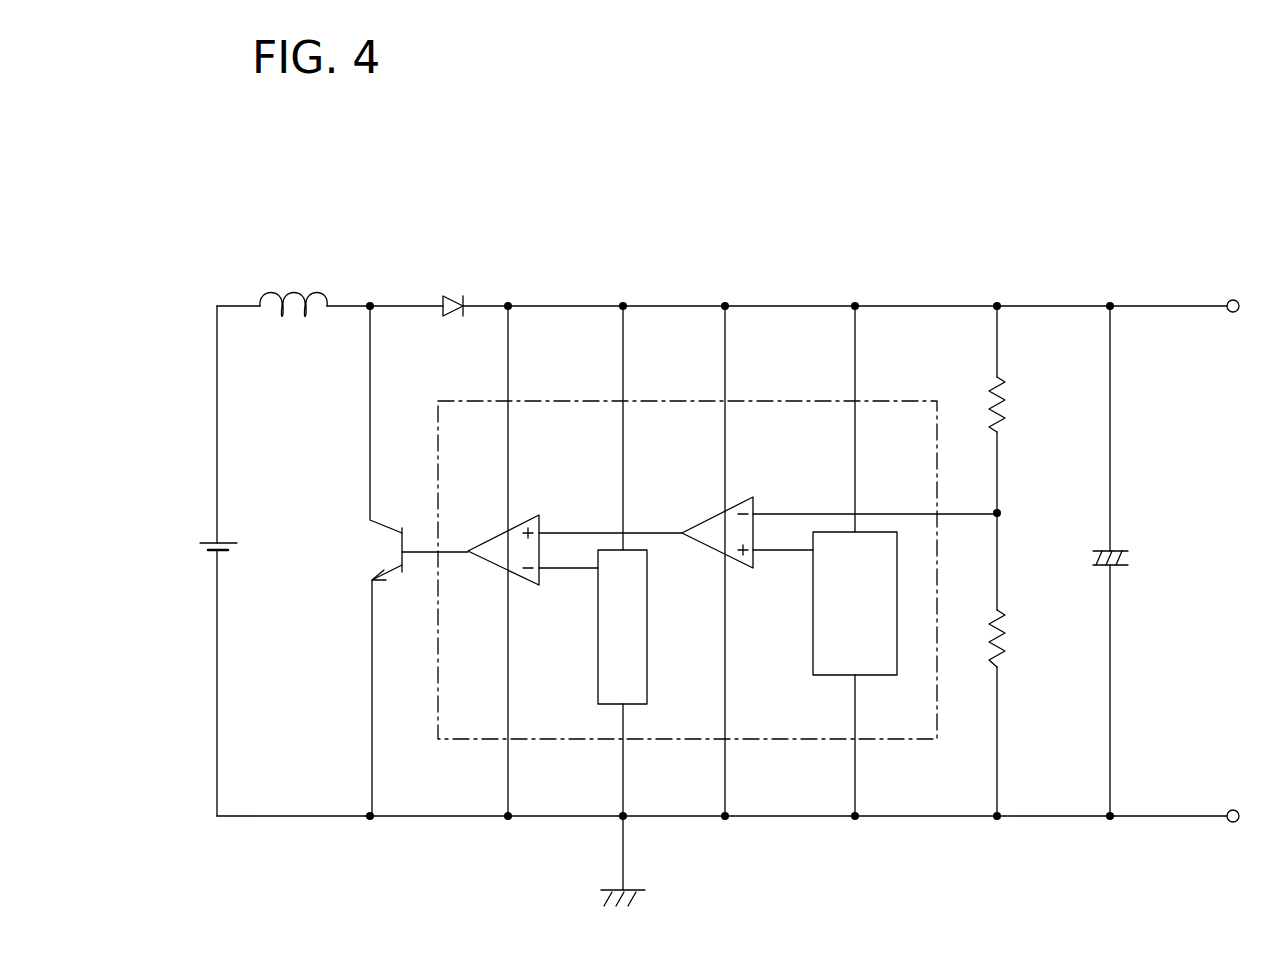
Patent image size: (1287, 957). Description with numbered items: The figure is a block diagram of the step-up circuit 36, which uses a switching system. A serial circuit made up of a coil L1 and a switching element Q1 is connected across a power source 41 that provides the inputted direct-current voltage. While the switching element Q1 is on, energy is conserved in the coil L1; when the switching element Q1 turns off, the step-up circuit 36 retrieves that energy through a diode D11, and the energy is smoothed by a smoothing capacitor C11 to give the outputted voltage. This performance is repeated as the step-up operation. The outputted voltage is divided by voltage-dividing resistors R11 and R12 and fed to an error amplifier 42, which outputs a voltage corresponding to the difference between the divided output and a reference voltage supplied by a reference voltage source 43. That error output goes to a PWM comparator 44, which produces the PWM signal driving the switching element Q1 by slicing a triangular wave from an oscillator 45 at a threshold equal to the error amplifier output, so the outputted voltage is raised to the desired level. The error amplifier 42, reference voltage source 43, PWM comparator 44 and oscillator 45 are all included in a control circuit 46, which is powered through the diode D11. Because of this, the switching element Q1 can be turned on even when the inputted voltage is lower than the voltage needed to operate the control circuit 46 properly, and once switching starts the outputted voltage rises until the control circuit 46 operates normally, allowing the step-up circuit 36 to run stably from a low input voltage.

The step-up circuit 36 is at (228, 215).
The power source 41 is at (228, 543).
The error amplifier 42 is at (705, 520).
The reference voltage source 43 is at (813, 645).
The PWM comparator 44 is at (492, 537).
The oscillator 45 is at (598, 645).
The control circuit 46 is at (792, 401).
The coil L1 is at (307, 292).
The diode D11 is at (462, 295).
The switching element Q1 is at (396, 535).
The voltage-dividing resistor R11 is at (1004, 384).
The voltage-dividing resistor R12 is at (1004, 616).
The smoothing capacitor C11 is at (1118, 552).